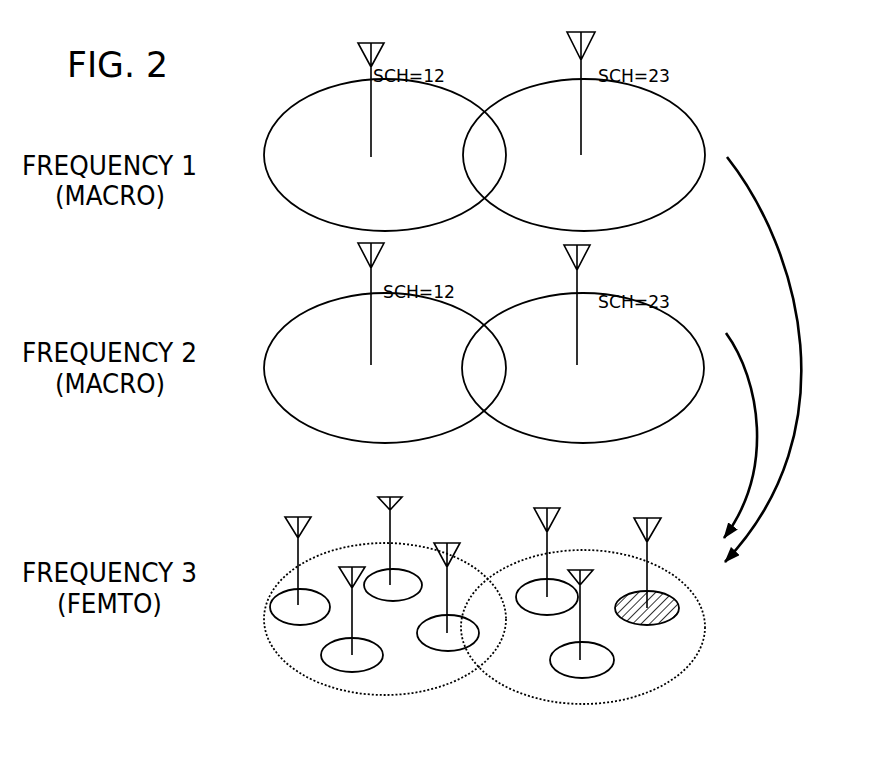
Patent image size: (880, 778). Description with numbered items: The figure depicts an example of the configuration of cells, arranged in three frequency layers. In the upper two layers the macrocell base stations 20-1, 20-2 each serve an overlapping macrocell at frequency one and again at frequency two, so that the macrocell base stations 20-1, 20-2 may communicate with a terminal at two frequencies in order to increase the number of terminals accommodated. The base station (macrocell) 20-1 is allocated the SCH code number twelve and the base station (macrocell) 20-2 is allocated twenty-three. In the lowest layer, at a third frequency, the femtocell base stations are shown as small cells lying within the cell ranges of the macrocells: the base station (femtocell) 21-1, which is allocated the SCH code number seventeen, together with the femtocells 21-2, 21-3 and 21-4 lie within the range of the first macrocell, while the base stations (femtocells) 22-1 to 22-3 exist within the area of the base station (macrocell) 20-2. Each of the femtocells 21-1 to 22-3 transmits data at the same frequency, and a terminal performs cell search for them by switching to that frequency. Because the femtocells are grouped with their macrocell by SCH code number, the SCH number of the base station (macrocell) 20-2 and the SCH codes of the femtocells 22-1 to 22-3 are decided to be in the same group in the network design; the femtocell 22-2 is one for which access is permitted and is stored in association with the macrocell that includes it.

The base station (macrocell) 20-1 is at (383, 43).
The base station (macrocell) 20-2 is at (593, 33).
The base station (femtocell) 21-1 is at (297, 515).
The base station (femtocell) 21-2 is at (395, 497).
The base station (femtocell) 21-3 is at (448, 543).
The base station (femtocell) 21-4 is at (352, 628).
The base station (femtocell) 22-1 is at (595, 482).
The base station (femtocell) 22-2 is at (650, 517).
The base station (femtocell) 22-3 is at (580, 617).